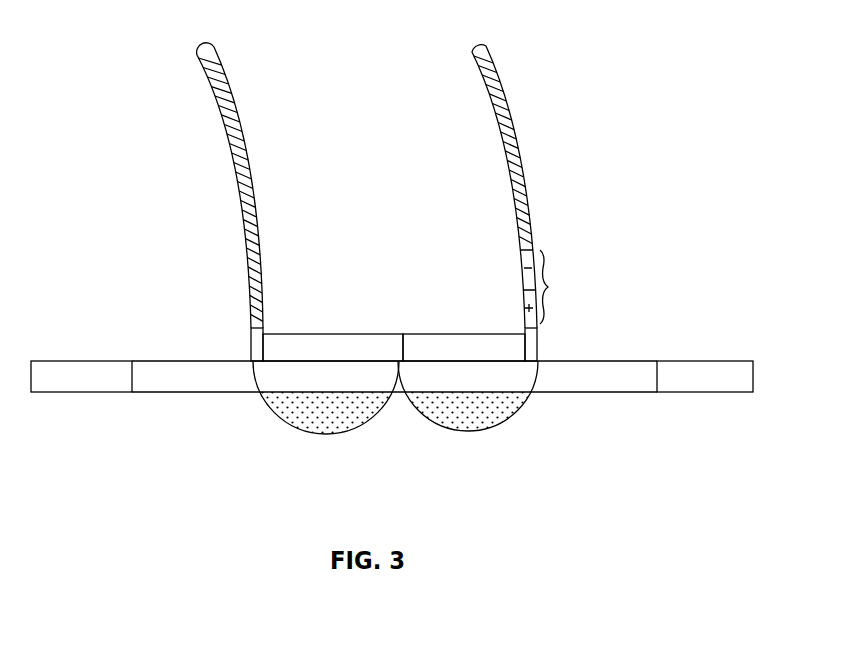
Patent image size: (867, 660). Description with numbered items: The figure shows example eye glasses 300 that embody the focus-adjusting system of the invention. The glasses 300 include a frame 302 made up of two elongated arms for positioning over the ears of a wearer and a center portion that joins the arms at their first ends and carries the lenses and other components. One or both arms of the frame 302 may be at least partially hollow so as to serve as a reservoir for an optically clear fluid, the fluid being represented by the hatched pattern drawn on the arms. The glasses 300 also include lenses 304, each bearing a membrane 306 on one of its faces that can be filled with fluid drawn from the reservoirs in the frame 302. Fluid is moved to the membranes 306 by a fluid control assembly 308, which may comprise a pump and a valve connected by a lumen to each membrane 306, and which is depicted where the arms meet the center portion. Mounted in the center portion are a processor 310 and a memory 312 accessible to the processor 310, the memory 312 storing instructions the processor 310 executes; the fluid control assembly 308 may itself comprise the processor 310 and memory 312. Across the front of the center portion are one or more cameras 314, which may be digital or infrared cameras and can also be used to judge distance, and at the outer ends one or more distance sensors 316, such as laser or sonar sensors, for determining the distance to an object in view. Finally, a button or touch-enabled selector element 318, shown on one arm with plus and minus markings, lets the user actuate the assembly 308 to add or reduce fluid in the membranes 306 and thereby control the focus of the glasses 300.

The eye glasses 300 is at (617, 122).
The frame 302 is at (217, 53).
The lenses 304 is at (262, 385).
The membrane 306 is at (297, 415).
The fluid control assembly 308 is at (249, 347).
The processor 310 is at (310, 334).
The memory 312 is at (425, 334).
The cameras 314 is at (176, 378).
The distance sensors 316 is at (78, 370).
The selector element 318 is at (554, 287).